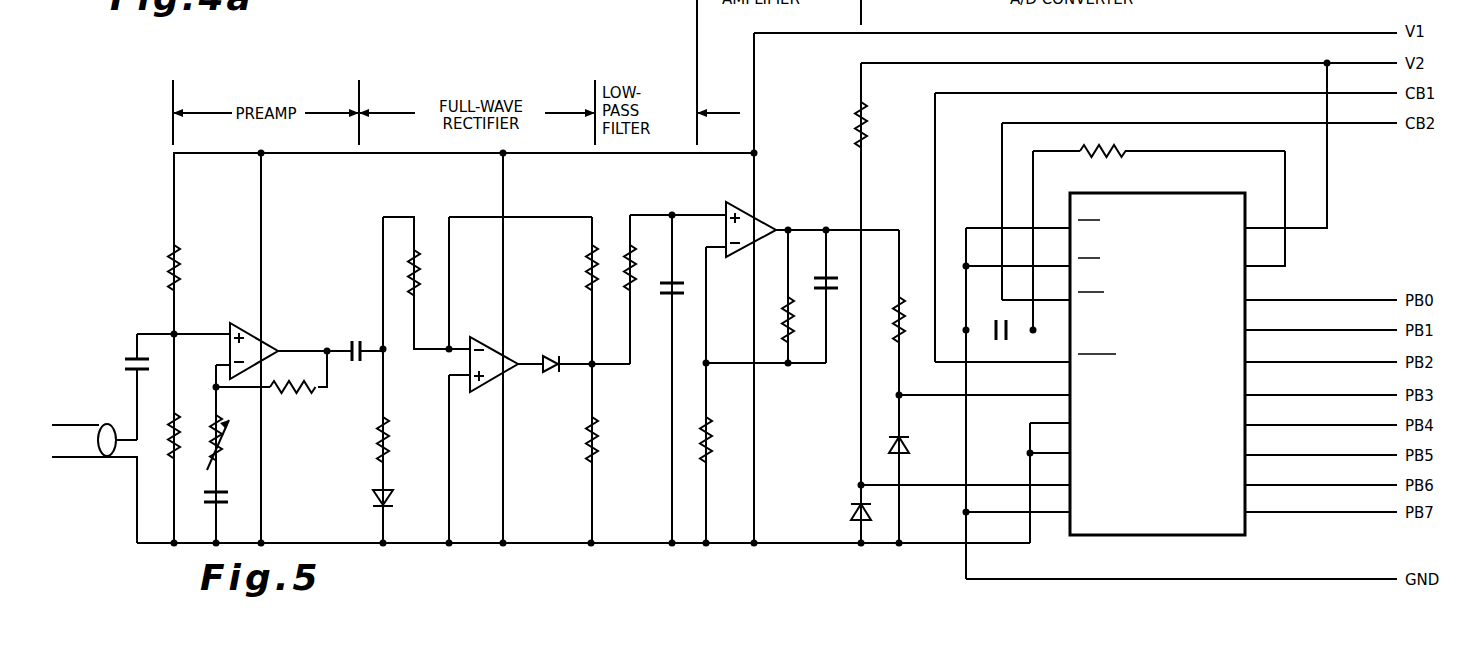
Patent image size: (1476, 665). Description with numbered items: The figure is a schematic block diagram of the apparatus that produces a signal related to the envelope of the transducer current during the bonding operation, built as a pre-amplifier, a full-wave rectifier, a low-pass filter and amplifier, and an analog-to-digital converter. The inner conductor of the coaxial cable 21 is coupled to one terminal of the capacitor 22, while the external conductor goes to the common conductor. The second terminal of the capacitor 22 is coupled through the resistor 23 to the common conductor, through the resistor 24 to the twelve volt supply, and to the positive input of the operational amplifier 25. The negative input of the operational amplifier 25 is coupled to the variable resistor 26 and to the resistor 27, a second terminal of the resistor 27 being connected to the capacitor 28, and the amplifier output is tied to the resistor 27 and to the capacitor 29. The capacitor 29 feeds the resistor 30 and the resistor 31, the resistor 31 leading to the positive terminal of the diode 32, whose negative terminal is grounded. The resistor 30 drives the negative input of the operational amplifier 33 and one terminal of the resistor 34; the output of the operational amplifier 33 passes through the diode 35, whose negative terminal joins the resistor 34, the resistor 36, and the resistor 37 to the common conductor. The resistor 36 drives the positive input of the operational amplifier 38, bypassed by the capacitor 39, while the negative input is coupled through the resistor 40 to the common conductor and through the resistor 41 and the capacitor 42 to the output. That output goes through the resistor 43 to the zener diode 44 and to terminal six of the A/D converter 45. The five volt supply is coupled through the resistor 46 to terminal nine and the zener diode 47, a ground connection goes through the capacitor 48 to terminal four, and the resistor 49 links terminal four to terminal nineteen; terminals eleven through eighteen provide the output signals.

The coaxial cable 21 is at (80, 425).
The capacitor 22 is at (137, 355).
The resistor 23 is at (178, 443).
The resistor 24 is at (178, 278).
The operational amplifier 25 is at (262, 335).
The variable resistor 26 is at (221, 438).
The resistor 27 is at (302, 390).
The capacitor 28 is at (218, 504).
The capacitor 29 is at (361, 355).
The resistor 30 is at (413, 290).
The resistor 31 is at (391, 422).
The diode 32 is at (392, 500).
The operational amplifier 33 is at (508, 354).
The resistor 34 is at (592, 290).
The diode 35 is at (545, 371).
The resistor 36 is at (630, 260).
The resistor 37 is at (594, 421).
The operational amplifier 38 is at (758, 216).
The capacitor 39 is at (671, 296).
The resistor 40 is at (709, 426).
The resistor 41 is at (786, 301).
The capacitor 42 is at (829, 293).
The resistor 43 is at (896, 316).
The zener diode 44 is at (900, 436).
The A/D converter 45 is at (1135, 536).
The resistor 46 is at (868, 116).
The zener diode 47 is at (876, 508).
The capacitor 48 is at (1003, 322).
The resistor 49 is at (1116, 157).